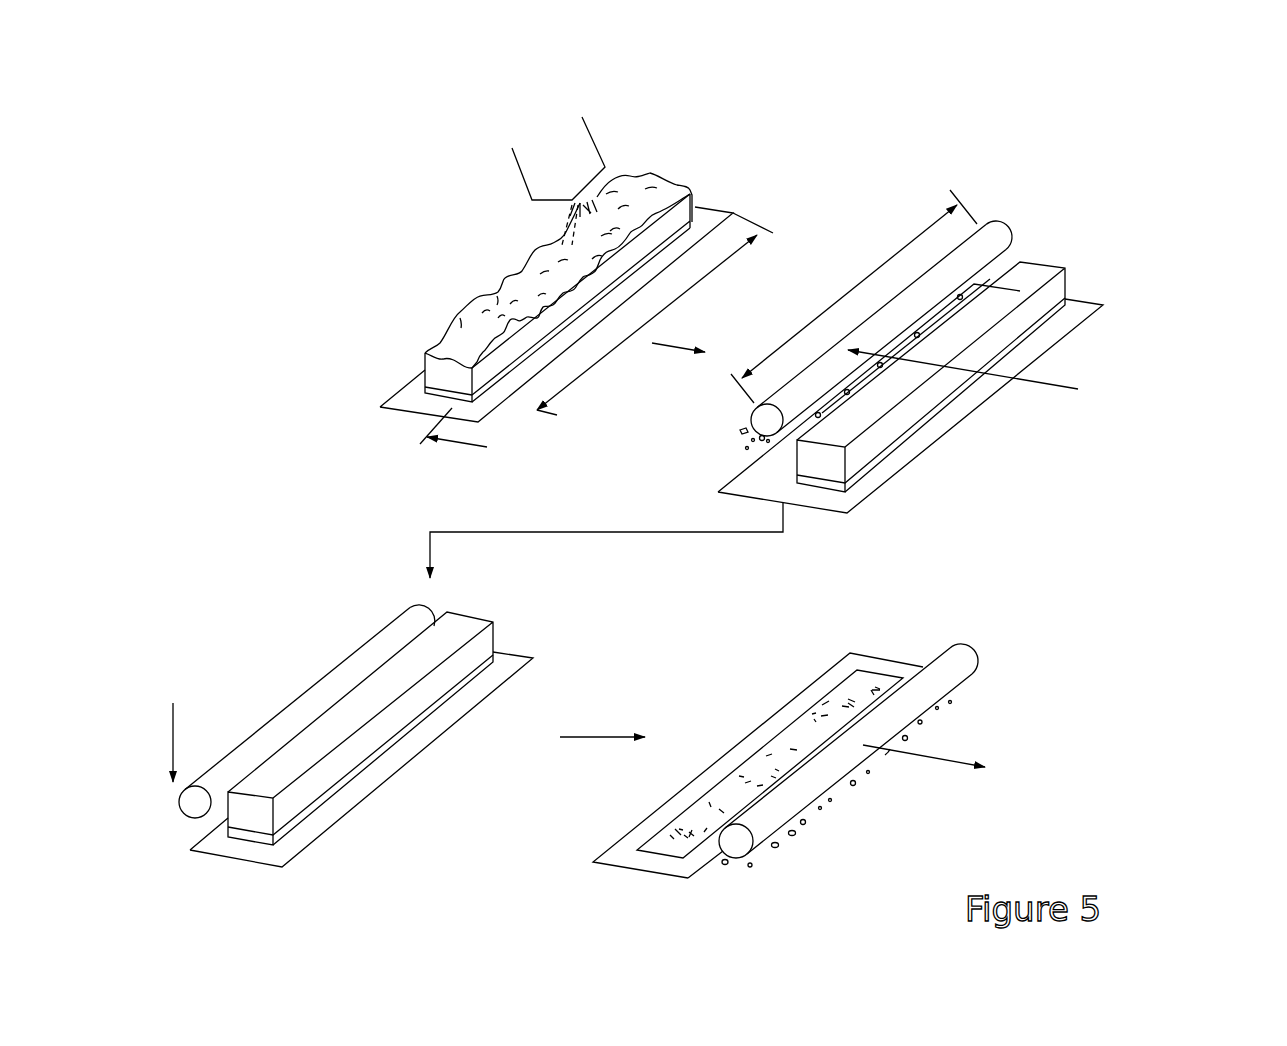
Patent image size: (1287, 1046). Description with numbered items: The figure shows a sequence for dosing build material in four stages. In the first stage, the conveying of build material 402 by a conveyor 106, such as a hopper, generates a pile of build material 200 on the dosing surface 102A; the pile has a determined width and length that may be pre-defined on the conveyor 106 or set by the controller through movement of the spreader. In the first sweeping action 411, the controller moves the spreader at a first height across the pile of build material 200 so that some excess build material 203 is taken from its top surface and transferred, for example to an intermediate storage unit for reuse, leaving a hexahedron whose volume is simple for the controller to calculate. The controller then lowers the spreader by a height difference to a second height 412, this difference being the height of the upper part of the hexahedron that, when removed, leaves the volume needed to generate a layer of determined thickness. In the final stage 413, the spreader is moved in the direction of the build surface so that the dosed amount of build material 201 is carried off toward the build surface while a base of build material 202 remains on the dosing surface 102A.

The conveyor 106 is at (578, 139).
The conveying of build material 402 is at (714, 178).
The pile of build material 200 is at (467, 327).
The dosing surface 102A is at (418, 410).
The excess build material 203 is at (743, 443).
The first sweeping action 411 is at (1113, 297).
The base of build material 202 is at (1040, 333).
The dosed amount of build material 201 is at (880, 442).
The second height 412 is at (531, 608).
The bar removal step 413 is at (1001, 658).